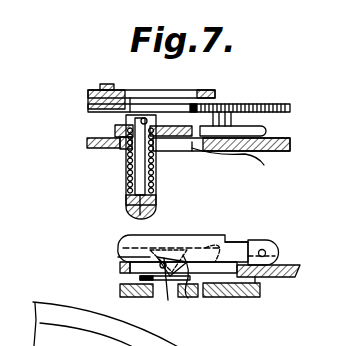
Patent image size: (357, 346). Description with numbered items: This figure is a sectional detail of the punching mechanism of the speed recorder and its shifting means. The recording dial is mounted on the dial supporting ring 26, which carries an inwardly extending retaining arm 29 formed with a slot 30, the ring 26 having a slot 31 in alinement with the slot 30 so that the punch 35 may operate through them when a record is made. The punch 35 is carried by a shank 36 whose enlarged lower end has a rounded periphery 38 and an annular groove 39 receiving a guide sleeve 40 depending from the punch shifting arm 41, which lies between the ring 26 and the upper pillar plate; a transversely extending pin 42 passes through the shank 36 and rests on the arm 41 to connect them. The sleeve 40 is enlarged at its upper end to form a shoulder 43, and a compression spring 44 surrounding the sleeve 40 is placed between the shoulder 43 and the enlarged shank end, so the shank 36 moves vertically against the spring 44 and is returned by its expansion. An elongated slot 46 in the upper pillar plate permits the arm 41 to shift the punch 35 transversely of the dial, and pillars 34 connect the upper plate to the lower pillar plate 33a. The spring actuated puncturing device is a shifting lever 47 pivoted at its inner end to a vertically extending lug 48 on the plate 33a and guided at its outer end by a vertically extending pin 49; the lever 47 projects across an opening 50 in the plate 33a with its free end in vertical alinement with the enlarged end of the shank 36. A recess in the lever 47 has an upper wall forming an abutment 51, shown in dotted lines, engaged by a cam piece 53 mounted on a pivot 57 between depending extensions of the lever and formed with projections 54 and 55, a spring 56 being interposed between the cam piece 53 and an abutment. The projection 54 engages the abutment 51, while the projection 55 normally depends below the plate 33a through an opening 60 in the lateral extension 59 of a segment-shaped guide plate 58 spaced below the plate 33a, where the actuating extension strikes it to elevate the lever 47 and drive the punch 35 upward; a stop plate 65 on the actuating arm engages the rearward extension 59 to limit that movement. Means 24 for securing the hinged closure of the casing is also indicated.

The securing means 24 is at (90, 143).
The dial supporting ring 26 is at (90, 104).
The retaining arm 29 is at (217, 96).
The slot 30 is at (184, 96).
The slot 31 is at (131, 108).
The lower pillar plate 33a is at (300, 272).
The pillars 34 is at (128, 208).
The punch 35 is at (140, 119).
The shank 36 is at (158, 172).
The rounded periphery 38 is at (123, 234).
The annular groove 39 is at (153, 210).
The guide sleeve 40 is at (128, 183).
The punch shifting arm 41 is at (266, 131).
The transversely extending pin 42 is at (144, 121).
The shoulder 43 is at (128, 148).
The compression spring 44 is at (221, 163).
The elongated slot 46 is at (241, 164).
The shifting lever 47 is at (228, 238).
The vertically extending lug 48 is at (270, 243).
The vertically extending pin 49 is at (117, 240).
The opening 50 is at (233, 297).
The abutment 51 is at (147, 243).
The cam piece 53 is at (178, 300).
The projection 54 is at (122, 262).
The projection 55 is at (165, 293).
The spring 56 is at (192, 245).
The pivot 57 is at (135, 282).
The segment-shaped guide plate 58 is at (103, 307).
The lateral extension 59 is at (197, 297).
The opening 60 is at (145, 281).
The stop plate 65 is at (260, 297).